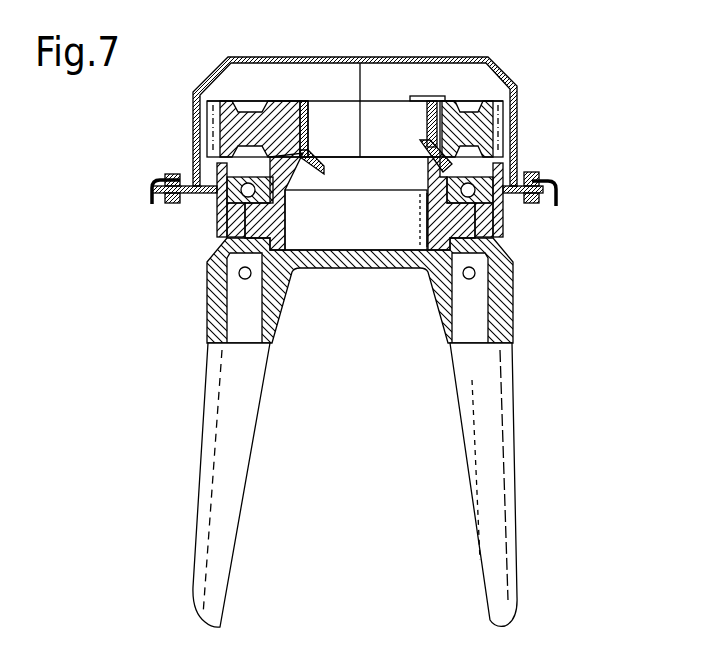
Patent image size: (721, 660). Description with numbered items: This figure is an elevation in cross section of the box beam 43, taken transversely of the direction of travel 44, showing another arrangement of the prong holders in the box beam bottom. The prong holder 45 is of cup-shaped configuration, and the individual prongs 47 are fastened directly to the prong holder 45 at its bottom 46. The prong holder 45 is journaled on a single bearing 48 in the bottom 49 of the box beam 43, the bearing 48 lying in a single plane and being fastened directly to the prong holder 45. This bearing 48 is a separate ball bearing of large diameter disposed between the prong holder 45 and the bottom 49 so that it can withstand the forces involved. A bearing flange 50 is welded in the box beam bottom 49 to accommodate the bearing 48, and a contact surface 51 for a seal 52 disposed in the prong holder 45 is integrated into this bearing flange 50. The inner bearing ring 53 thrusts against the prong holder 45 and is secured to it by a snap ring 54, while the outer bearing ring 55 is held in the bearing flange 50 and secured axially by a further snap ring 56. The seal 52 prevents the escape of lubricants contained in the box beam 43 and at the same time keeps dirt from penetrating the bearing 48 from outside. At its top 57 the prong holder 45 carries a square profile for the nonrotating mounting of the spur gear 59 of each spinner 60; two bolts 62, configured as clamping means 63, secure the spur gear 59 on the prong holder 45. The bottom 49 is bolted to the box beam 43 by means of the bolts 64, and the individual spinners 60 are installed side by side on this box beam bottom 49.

The box beam 43 is at (455, 57).
The direction of travel 44 is at (608, 432).
The prong holder 45 is at (291, 279).
The bottom 46 is at (503, 340).
The prongs 47 is at (235, 483).
The bearing 48 is at (217, 203).
The bottom 49 is at (513, 190).
The bearing flange 50 is at (232, 212).
The contact surface 51 is at (497, 227).
The seal 52 is at (262, 216).
The inner bearing ring 53 is at (442, 200).
The snap ring 54 is at (262, 169).
The outer bearing ring 55 is at (497, 178).
The snap ring 56 is at (216, 170).
The top 57 is at (330, 94).
The spur gear 59 is at (275, 103).
The spinner 60 is at (193, 433).
The bolts 62 is at (437, 100).
The clamping means 63 is at (428, 98).
The bolts 64 is at (172, 205).